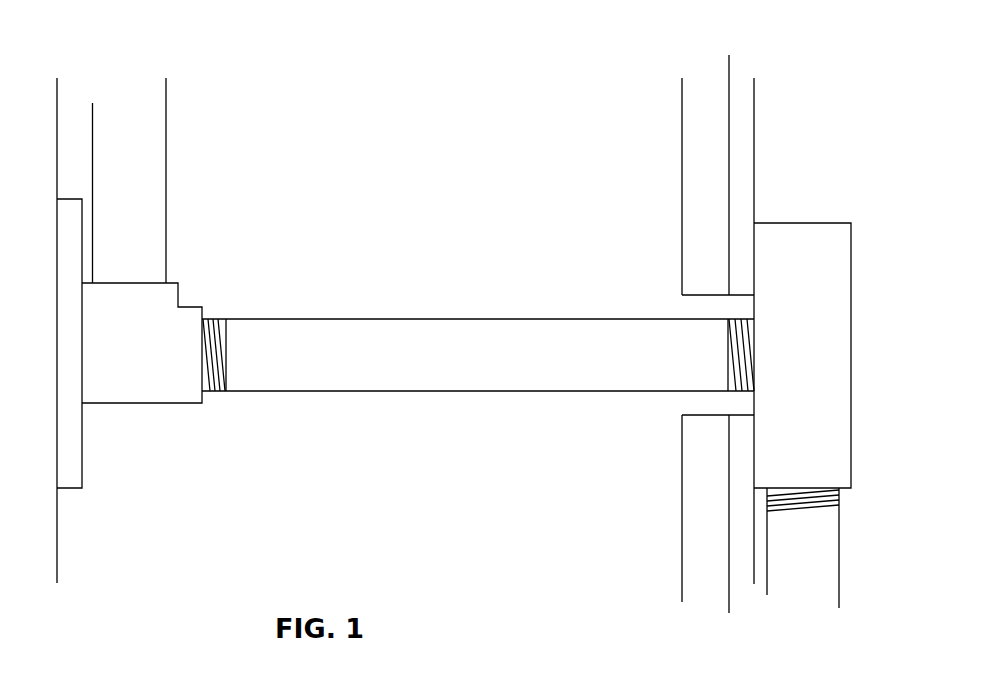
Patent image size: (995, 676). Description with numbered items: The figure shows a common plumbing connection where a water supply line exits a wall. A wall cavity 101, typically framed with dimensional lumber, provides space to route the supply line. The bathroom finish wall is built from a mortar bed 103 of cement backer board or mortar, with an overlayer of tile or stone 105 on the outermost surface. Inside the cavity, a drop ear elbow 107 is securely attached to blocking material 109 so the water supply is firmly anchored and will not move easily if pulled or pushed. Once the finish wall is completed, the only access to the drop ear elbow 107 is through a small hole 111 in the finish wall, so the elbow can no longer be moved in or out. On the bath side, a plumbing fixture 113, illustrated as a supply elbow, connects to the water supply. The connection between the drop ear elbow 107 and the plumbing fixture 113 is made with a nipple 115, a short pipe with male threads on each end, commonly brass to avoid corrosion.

The wall cavity 101 is at (231, 180).
The mortar bed 103 is at (695, 202).
The tile or stone 105 is at (742, 122).
The drop ear elbow 107 is at (143, 403).
The blocking material 109 is at (88, 483).
The small hole 111 is at (695, 304).
The plumbing fixture 113 is at (813, 215).
The nipple 115 is at (292, 320).